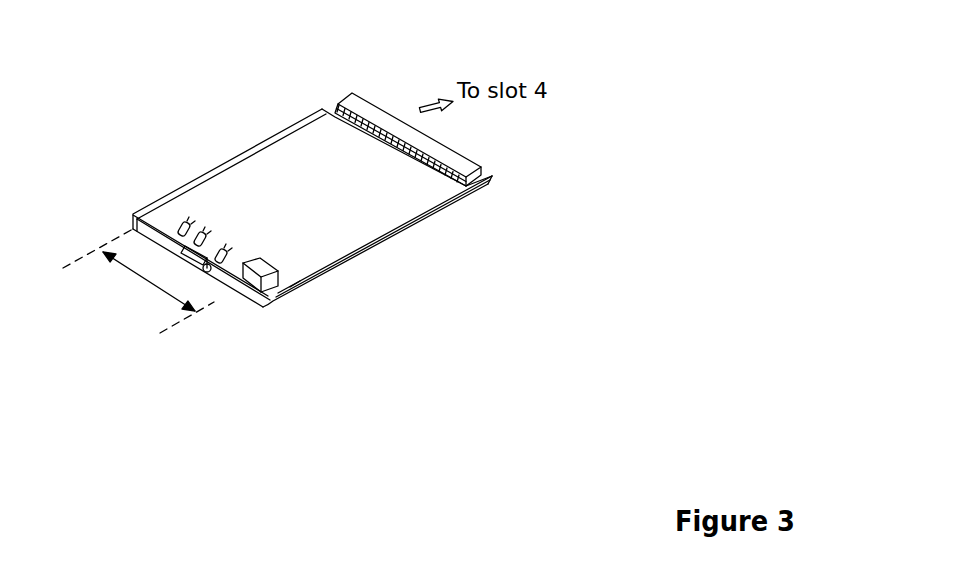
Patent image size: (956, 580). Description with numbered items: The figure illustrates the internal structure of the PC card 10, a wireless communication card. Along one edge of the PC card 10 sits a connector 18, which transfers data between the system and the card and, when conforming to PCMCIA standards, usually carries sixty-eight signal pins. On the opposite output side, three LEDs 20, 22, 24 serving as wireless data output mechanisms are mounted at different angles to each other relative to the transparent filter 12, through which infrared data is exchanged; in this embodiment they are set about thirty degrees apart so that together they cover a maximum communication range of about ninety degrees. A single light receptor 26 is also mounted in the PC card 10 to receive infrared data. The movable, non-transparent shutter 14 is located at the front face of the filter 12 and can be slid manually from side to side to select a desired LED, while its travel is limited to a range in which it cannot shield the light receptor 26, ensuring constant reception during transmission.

The PC card 10 is at (215, 168).
The filter 12 is at (238, 292).
The shutter 14 is at (214, 288).
The connector 18 is at (348, 92).
The LED 20 is at (188, 221).
The LED 22 is at (210, 236).
The LED 24 is at (248, 256).
The light receptor 26 is at (292, 288).